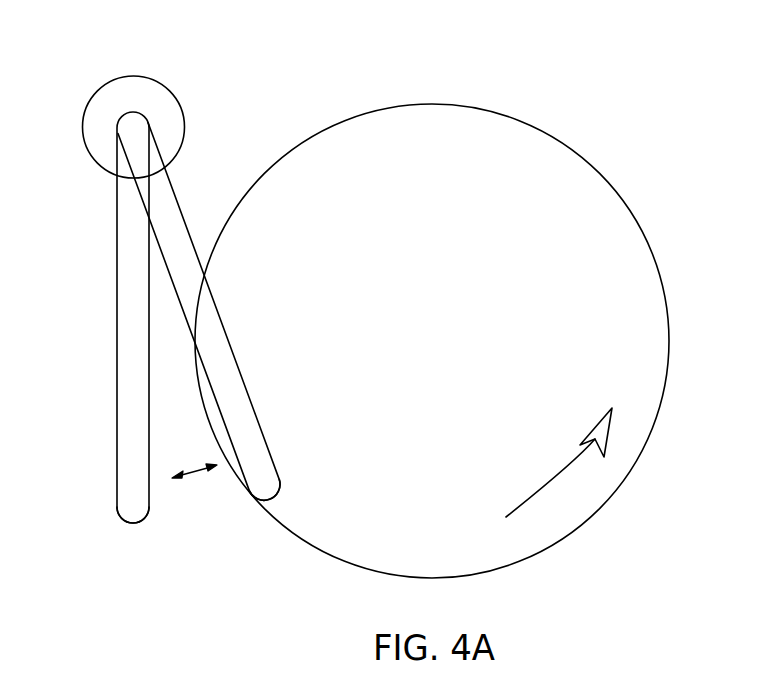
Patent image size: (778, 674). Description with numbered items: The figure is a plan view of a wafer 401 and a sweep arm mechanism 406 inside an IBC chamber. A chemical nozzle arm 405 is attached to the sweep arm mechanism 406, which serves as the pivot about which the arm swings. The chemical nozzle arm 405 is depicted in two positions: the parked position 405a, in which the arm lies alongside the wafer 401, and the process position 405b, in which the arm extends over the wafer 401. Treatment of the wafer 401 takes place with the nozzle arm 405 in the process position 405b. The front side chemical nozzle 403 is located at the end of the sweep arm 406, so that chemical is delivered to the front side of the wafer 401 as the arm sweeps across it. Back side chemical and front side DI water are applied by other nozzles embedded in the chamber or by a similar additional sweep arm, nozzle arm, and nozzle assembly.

The wafer 401 is at (430, 287).
The front side chemical nozzle 403 is at (133, 523).
The chemical nozzle arm 405 is at (186, 317).
The parked position 405a is at (134, 444).
The process position 405b is at (253, 407).
The sweep arm mechanism 406 is at (134, 77).